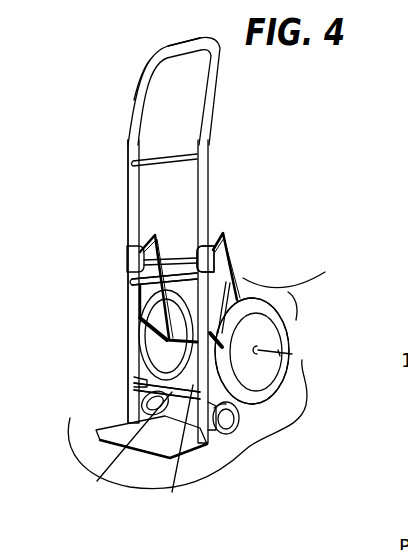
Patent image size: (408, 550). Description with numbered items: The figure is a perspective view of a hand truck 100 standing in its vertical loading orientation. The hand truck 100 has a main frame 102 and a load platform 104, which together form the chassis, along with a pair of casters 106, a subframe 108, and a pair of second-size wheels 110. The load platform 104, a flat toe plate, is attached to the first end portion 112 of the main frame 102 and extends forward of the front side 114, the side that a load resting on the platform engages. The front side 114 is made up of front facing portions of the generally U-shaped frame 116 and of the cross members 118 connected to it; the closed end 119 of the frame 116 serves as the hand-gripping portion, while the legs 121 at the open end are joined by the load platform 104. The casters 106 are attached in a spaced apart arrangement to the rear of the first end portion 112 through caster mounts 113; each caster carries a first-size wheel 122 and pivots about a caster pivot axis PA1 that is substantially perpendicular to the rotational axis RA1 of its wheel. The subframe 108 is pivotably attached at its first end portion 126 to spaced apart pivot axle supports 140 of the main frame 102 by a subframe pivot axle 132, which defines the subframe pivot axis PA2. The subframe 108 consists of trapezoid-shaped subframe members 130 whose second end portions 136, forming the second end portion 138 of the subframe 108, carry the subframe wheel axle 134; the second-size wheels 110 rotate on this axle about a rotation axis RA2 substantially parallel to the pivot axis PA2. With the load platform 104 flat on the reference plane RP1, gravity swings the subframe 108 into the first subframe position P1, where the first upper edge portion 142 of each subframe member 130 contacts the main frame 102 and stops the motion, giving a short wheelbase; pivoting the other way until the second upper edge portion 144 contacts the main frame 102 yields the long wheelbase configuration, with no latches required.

The hand truck 100 is at (230, 186).
The main frame 102 is at (218, 72).
The load platform 104 is at (96, 432).
The casters 106 is at (262, 428).
The subframe 108 is at (240, 258).
The second-size wheels 110 is at (283, 378).
The first end portion of the main frame 112 is at (134, 392).
The caster mounts 113 is at (226, 431).
The front side of the main frame 114 is at (125, 197).
The U-shaped frame 116 is at (134, 91).
The cross members 118 is at (133, 163).
The closed end of the frame 119 is at (188, 40).
The legs of the frame 121 is at (141, 408).
The first-size wheels 122 is at (242, 421).
The first end portion of the subframe 126 is at (218, 240).
The subframe members 130 is at (150, 236).
The subframe pivot axle 132 is at (180, 258).
The subframe wheel axle 134 is at (143, 340).
The second end portion of the subframe members 136 is at (155, 323).
The second end portion of the subframe 138 is at (158, 302).
The pivot axle supports 140 is at (127, 259).
The first upper edge portion 142 is at (262, 305).
The second upper edge portion 144 is at (225, 250).
The caster pivot axis PA1 is at (175, 451).
The subframe pivot axis PA2 is at (258, 275).
The first subframe position P1 is at (289, 291).
The rotational axis of the first-size wheel RA1 is at (115, 442).
The rotation axis of the second-size wheels RA2 is at (286, 354).
The reference plane RP1 is at (302, 385).